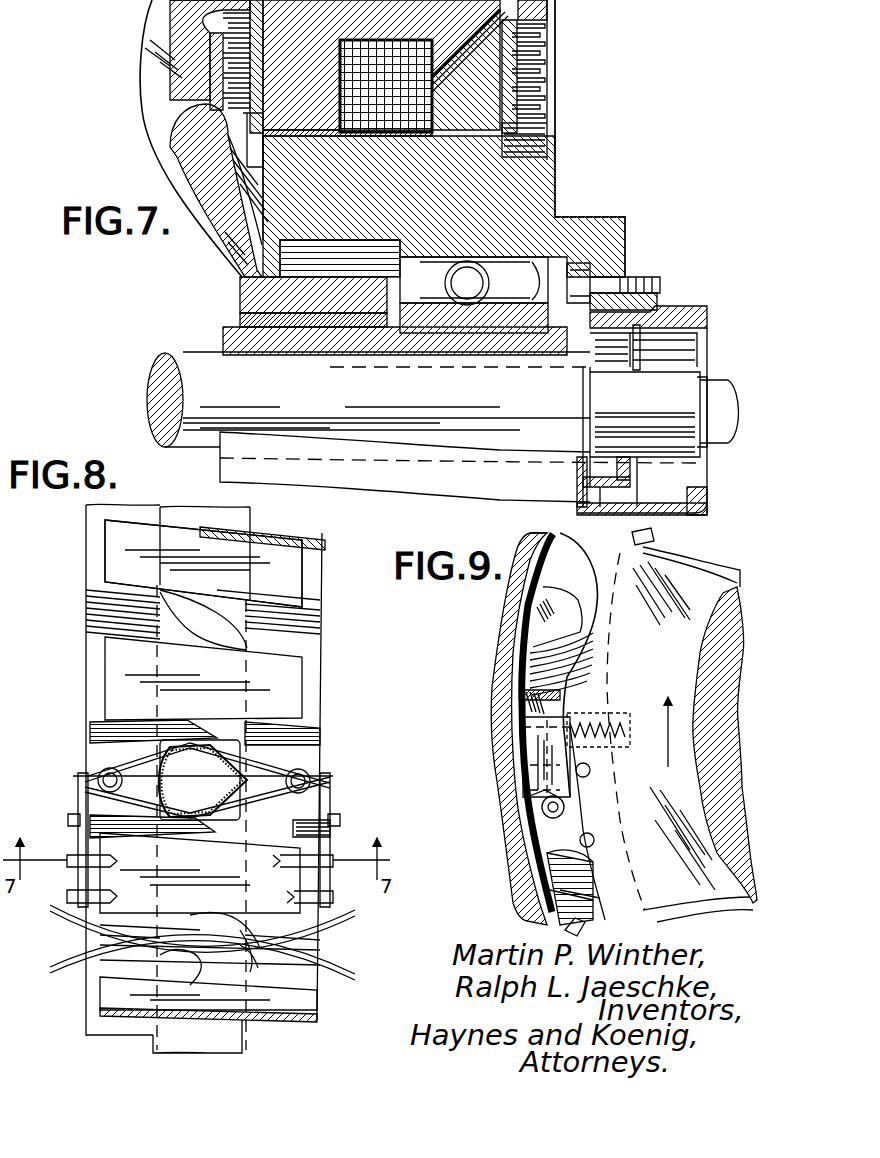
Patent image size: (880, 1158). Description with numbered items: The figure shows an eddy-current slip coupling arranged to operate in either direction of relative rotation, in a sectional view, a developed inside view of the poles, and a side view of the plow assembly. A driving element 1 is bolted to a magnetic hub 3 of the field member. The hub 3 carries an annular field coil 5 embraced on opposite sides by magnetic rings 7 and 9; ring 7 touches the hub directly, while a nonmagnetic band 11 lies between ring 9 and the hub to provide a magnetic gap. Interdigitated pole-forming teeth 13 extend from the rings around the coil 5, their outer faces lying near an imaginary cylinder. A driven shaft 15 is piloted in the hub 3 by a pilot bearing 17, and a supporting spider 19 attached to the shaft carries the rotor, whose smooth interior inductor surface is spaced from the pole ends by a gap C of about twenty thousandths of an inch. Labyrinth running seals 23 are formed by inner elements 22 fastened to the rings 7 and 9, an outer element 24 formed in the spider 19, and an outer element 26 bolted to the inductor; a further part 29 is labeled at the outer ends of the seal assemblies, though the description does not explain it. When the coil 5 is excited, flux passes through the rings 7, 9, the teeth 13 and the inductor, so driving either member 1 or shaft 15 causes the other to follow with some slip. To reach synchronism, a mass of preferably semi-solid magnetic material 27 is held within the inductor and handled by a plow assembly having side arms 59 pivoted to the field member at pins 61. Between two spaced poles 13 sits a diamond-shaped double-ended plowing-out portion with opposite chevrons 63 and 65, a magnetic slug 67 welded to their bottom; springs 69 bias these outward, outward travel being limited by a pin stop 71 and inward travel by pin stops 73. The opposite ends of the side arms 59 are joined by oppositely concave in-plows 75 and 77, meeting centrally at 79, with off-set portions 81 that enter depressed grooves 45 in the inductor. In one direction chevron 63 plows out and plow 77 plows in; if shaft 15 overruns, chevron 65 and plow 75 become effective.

In FIG. 7, the driving element 1 is at (680, 316).
In FIG. 7, the hub 3 is at (546, 208).
In FIG. 9, the hub 3 is at (736, 722).
In FIG. 7, the annular field coil 5 is at (388, 132).
In FIG. 8, the annular field coil 5 is at (198, 512).
In FIG. 9, the annular field coil 5 is at (703, 555).
In FIG. 7, the magnetic ring 7 is at (459, 140).
In FIG. 8, the magnetic ring 7 is at (280, 531).
In FIG. 9, the magnetic ring 7 is at (608, 550).
In FIG. 7, the magnetic ring 9 is at (298, 134).
In FIG. 8, the magnetic ring 9 is at (95, 528).
In FIG. 9, the magnetic ring 9 is at (652, 538).
In FIG. 7, the nonmagnetic band 11 is at (322, 136).
In FIG. 8, the interdigitated pole-forming teeth 13 is at (203, 760).
In FIG. 9, the interdigitated pole-forming teeth 13 is at (560, 534).
In FIG. 7, the driven shaft 15 is at (320, 405).
In FIG. 7, the pilot bearing 17 is at (490, 282).
In FIG. 7, the supporting spider 19 is at (235, 238).
In FIG. 7, the inner seal elements 22 is at (262, 66).
In FIG. 7, the labyrinth running seals 23 is at (220, 88).
In FIG. 7, the outer seal element 24 is at (212, 52).
In FIG. 7, the outer seal element 26 is at (546, 57).
In FIG. 9, the semi-solid magnetic material 27 is at (537, 541).
In FIG. 7, the cap 29 is at (212, 8).
In FIG. 9, the depressed grooves 45 is at (560, 727).
In FIG. 8, the side arms 59 is at (76, 799).
In FIG. 9, the side arms 59 is at (530, 777).
In FIG. 8, the pivot pins 61 is at (68, 860).
In FIG. 9, the pivot pins 61 is at (566, 806).
In FIG. 8, the plowing-out chevron 63 is at (258, 762).
In FIG. 9, the plowing-out chevron 63 is at (517, 680).
In FIG. 8, the plowing-out chevron 65 is at (268, 806).
In FIG. 9, the plowing-out chevron 65 is at (500, 753).
In FIG. 8, the magnetic slug 67 is at (230, 744).
In FIG. 9, the magnetic slug 67 is at (513, 660).
In FIG. 8, the springs 69 is at (98, 770).
In FIG. 9, the springs 69 is at (605, 717).
In FIG. 8, the pin stop 71 is at (70, 898).
In FIG. 9, the pin stop 71 is at (595, 840).
In FIG. 8, the pin stops 73 is at (68, 820).
In FIG. 9, the pin stops 73 is at (592, 770).
In FIG. 8, the concave in-plow 75 is at (255, 960).
In FIG. 9, the concave in-plow 75 is at (628, 895).
In FIG. 8, the concave in-plow 77 is at (253, 928).
In FIG. 9, the concave in-plow 77 is at (603, 863).
In FIG. 8, the central engaging portion 79 is at (190, 965).
In FIG. 8, the off-set portions 81 is at (75, 918).
In FIG. 9, the off-set portions 81 is at (565, 870).
In FIG. 9, the gap C is at (508, 800).